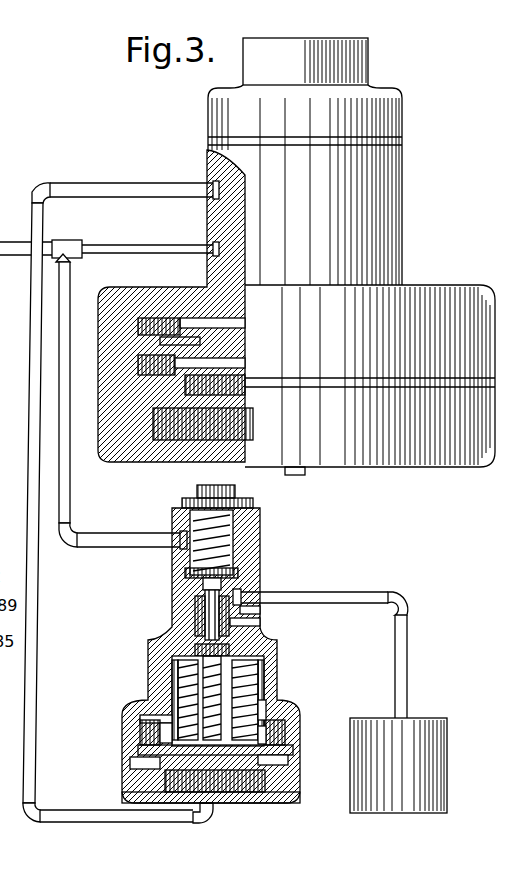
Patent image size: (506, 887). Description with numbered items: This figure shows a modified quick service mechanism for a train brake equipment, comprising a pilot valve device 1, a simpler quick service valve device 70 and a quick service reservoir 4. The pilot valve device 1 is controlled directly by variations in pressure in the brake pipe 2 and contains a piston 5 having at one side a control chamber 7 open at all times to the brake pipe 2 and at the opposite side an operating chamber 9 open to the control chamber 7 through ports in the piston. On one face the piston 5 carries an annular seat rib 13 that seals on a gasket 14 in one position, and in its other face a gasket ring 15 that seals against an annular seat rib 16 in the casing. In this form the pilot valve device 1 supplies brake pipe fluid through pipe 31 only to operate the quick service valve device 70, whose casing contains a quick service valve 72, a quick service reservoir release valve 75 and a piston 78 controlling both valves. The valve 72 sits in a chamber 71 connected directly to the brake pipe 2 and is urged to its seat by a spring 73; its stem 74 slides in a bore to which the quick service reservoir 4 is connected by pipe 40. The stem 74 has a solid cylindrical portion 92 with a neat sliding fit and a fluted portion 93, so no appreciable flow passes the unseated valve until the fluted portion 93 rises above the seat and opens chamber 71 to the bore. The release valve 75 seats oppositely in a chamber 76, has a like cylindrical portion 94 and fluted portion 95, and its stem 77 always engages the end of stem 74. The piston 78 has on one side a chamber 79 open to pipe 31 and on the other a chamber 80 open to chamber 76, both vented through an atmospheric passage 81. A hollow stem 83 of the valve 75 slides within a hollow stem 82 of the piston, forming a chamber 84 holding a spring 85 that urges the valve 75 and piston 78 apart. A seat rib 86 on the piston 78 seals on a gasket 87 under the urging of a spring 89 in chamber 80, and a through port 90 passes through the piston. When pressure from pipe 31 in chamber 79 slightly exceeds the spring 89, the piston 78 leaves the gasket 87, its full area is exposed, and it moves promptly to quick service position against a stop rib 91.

The pilot valve device 1 is at (207, 160).
The brake pipe 2 is at (117, 250).
The quick service reservoir 4 is at (408, 725).
The piston 5 is at (150, 352).
The control chamber 7 is at (155, 335).
The operating chamber 9 is at (190, 440).
The annular seat rib 13 is at (150, 362).
The gasket 14 is at (150, 384).
The gasket ring 15 is at (150, 330).
The annular seat rib 16 is at (178, 335).
The pipe 31 is at (96, 188).
The pipe 40 is at (348, 592).
The quick service valve device 70 is at (155, 650).
The chamber 71 is at (235, 540).
The quick service valve 72 is at (240, 575).
The spring 73 is at (245, 515).
The valve stem 74 is at (200, 600).
The quick service reservoir release valve 75 is at (268, 664).
The chamber 76 is at (230, 648).
The stem 77 is at (192, 622).
The quick service piston 78 is at (145, 760).
The chamber 79 is at (238, 780).
The chamber 80 is at (262, 725).
The atmospheric passage 81 is at (272, 692).
The hollow stem 82 is at (150, 712).
The hollow stem 83 is at (178, 677).
The chamber 84 is at (262, 735).
The spring 85 is at (150, 722).
The seat rib 86 is at (140, 775).
The gasket 87 is at (130, 800).
The spring 89 is at (268, 675).
The through port 90 is at (270, 760).
The stop rib 91 is at (152, 702).
The solid cylindrical portion 92 is at (232, 588).
The fluted portion 93 is at (245, 592).
The cylindrical portion 94 is at (262, 625).
The fluted portion 95 is at (262, 612).